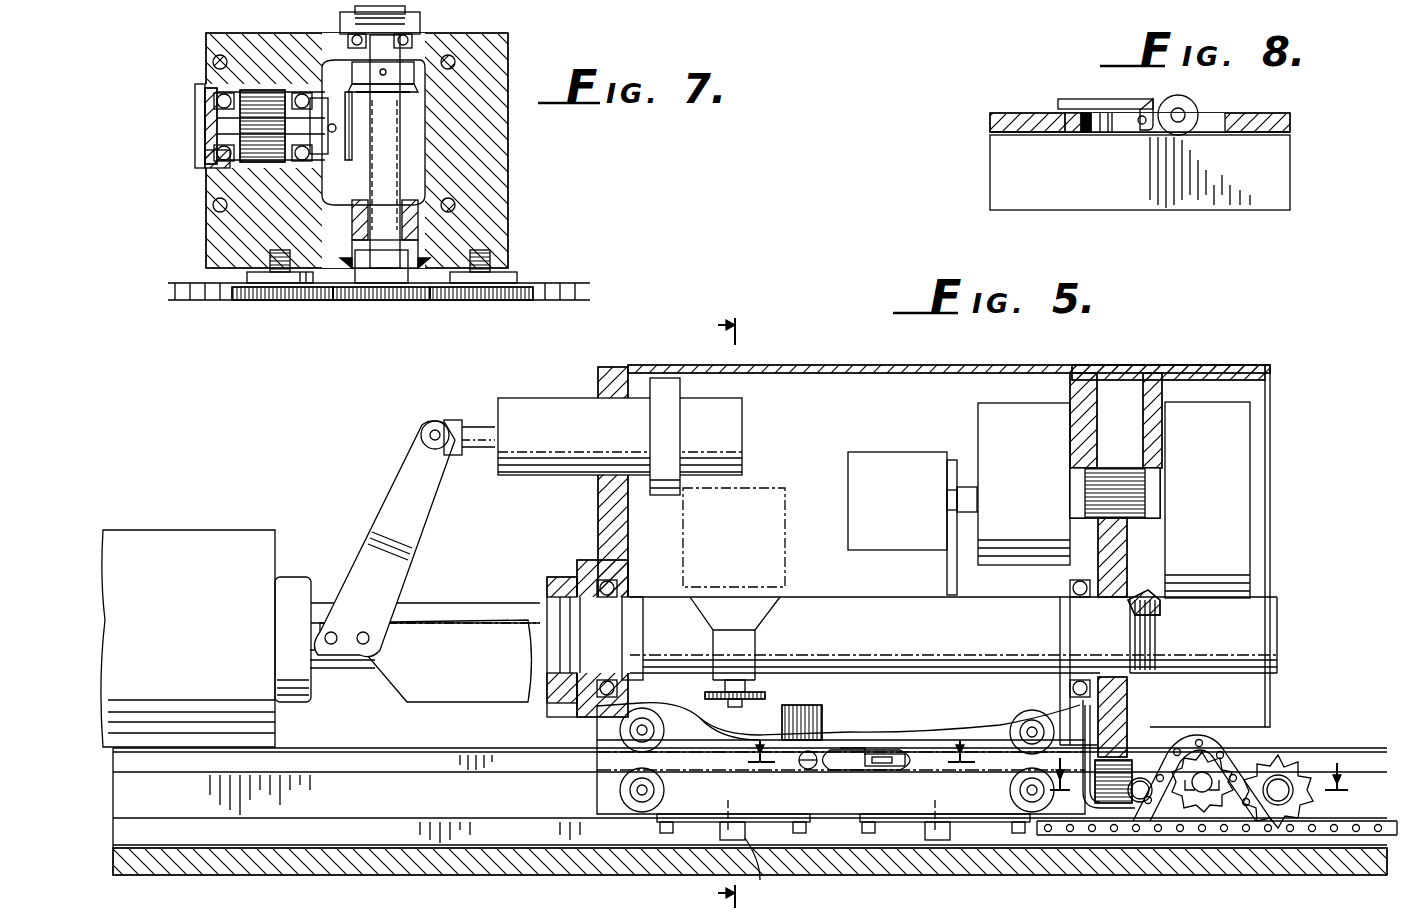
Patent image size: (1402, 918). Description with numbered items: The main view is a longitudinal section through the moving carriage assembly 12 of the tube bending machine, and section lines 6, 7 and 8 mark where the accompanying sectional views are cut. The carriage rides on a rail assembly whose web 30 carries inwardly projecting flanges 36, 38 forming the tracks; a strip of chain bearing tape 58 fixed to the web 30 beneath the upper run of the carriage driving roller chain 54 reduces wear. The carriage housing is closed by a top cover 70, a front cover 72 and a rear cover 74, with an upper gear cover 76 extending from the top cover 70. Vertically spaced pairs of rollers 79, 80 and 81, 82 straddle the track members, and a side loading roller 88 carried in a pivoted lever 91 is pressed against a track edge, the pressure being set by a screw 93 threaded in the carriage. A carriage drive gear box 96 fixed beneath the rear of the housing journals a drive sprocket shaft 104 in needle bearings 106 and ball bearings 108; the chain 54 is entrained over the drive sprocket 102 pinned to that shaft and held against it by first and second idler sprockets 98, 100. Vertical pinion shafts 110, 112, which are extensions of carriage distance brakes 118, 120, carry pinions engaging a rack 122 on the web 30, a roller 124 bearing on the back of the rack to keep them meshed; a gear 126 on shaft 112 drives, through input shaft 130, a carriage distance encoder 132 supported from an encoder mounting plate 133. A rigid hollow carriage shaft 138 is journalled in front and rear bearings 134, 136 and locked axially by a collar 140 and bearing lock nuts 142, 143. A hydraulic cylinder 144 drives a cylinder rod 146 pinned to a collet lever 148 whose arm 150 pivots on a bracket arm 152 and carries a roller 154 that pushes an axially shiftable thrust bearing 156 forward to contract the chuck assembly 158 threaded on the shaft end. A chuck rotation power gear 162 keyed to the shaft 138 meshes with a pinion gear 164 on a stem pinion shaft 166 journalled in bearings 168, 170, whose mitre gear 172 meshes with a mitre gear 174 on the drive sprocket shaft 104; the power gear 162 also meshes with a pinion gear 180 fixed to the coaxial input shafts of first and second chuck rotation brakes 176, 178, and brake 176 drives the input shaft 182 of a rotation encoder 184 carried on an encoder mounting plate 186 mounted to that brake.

In FIG. 5, the carriage assembly 12 is at (925, 366).
In FIG. 5, the rail assembly web 30 is at (525, 877).
In FIG. 5, the flange 36 is at (505, 748).
In FIG. 8, the flange 38 is at (1130, 210).
In FIG. 5, the flange 38 is at (720, 790).
In FIG. 7, the carriage driving roller chain 54 is at (200, 302).
In FIG. 5, the carriage driving roller chain 54 is at (1350, 836).
In FIG. 5, the chain bearing tape 58 is at (175, 805).
In FIG. 5, the section line 6— 6 is at (709, 614).
In FIG. 5, the section line 7— 7 is at (1193, 781).
In FIG. 5, the section line 8— 8 is at (860, 772).
In FIG. 5, the top cover 70 is at (830, 365).
In FIG. 5, the front cover 72 is at (598, 497).
In FIG. 5, the rear cover 74 is at (1270, 503).
In FIG. 5, the upper gear cover 76 is at (1155, 365).
In FIG. 5, the roller 79 is at (620, 733).
In FIG. 5, the roller 80 is at (620, 790).
In FIG. 5, the roller 81 is at (1010, 735).
In FIG. 5, the roller 82 is at (1010, 792).
In FIG. 8, the side loading roller 88 is at (1188, 96).
In FIG. 5, the side loading roller 88 is at (888, 768).
In FIG. 8, the side loading lever 91 is at (1140, 112).
In FIG. 5, the side loading lever 91 is at (862, 766).
In FIG. 8, the screw 93 is at (1082, 132).
In FIG. 7, the carriage drive gear box 96 is at (512, 218).
In FIG. 5, the carriage drive gear box 96 is at (1083, 808).
In FIG. 7, the first idler sprocket 98 is at (280, 303).
In FIG. 5, the first idler sprocket 98 is at (1150, 810).
In FIG. 7, the second idler sprocket 100 is at (468, 303).
In FIG. 5, the second idler sprocket 100 is at (1285, 757).
In FIG. 7, the carriage drive sprocket 102 is at (385, 303).
In FIG. 5, the carriage drive sprocket 102 is at (1200, 812).
In FIG. 7, the drive sprocket shaft 104 is at (390, 170).
In FIG. 7, the needle bearings 106 is at (408, 228).
In FIG. 7, the ball bearings 108 is at (410, 42).
In FIG. 5, the pinion shaft 110 is at (932, 803).
In FIG. 5, the pinion shaft 112 is at (725, 803).
In FIG. 5, the carriage distance brake 118 is at (822, 710).
In FIG. 5, the carriage distance brake 120 is at (920, 725).
In FIG. 5, the rack 122 is at (395, 803).
In FIG. 5, the roller 124 is at (760, 880).
In FIG. 5, the gear 126 is at (765, 685).
In FIG. 5, the input shaft 130 is at (760, 622).
In FIG. 5, the carriage distance encoder 132 is at (760, 488).
In FIG. 5, the encoder mounting plate 133 is at (748, 597).
In FIG. 5, the front bearing 134 is at (620, 585).
In FIG. 5, the rear bearing 136 is at (1078, 580).
In FIG. 5, the carriage shaft 138 is at (535, 583).
In FIG. 5, the collar 140 is at (640, 683).
In FIG. 5, the bearing lock nut 142 is at (575, 560).
In FIG. 5, the bearing lock nut 143 is at (1150, 620).
In FIG. 5, the hydraulic cylinder 144 is at (562, 398).
In FIG. 5, the cylinder rod 146 is at (478, 428).
In FIG. 5, the collet lever 148 is at (418, 515).
In FIG. 5, the lever arm 150 is at (385, 615).
In FIG. 5, the collet lever bracket arm 152 is at (460, 703).
In FIG. 5, the roller 154 is at (330, 660).
In FIG. 5, the thrust bearing 156 is at (300, 580).
In FIG. 5, the chuck assembly 158 is at (195, 525).
In FIG. 5, the chuck rotation power gear 162 is at (1128, 545).
In FIG. 7, the pinion gear 164 is at (265, 108).
In FIG. 5, the pinion gear 164 is at (1160, 737).
In FIG. 7, the stem pinion shaft 166 is at (215, 121).
In FIG. 7, the bearing 168 is at (213, 155).
In FIG. 7, the bearing 170 is at (297, 160).
In FIG. 7, the mitre gear 172 is at (340, 165).
In FIG. 7, the mitre gear 174 is at (412, 90).
In FIG. 5, the first chuck rotation brake 176 is at (978, 438).
In FIG. 5, the second chuck rotation brake 178 is at (1245, 435).
In FIG. 5, the pinion gear 180 is at (1122, 490).
In FIG. 5, the input shaft 182 is at (958, 497).
In FIG. 5, the rotation encoder 184 is at (880, 555).
In FIG. 5, the encoder mounting plate 186 is at (945, 575).